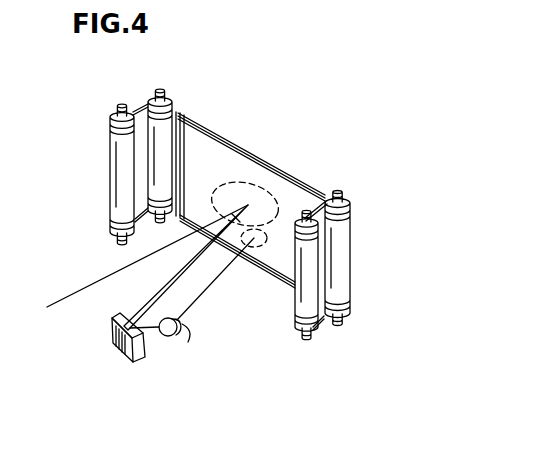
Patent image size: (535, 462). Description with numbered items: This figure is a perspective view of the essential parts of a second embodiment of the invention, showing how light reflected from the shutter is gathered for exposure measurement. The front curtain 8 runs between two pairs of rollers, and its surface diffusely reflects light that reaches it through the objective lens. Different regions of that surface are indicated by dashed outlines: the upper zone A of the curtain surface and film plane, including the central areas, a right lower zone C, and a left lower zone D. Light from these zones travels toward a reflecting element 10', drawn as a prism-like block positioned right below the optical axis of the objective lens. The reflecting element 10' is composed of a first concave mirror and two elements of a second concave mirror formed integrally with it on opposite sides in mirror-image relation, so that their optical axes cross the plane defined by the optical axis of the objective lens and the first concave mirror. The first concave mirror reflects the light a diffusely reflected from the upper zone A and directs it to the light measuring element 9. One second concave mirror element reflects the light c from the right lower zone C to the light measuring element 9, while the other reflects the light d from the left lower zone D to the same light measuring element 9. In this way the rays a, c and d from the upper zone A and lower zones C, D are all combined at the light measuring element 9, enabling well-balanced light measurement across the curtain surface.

The front curtain 8 is at (210, 136).
The upper zone A is at (253, 190).
The right lower zone C is at (251, 247).
The left lower zone D is at (197, 234).
The light beam a is at (168, 276).
The light c is at (228, 258).
The light d is at (183, 317).
The light measuring element 9 is at (167, 338).
The reflecting element 10' is at (106, 350).